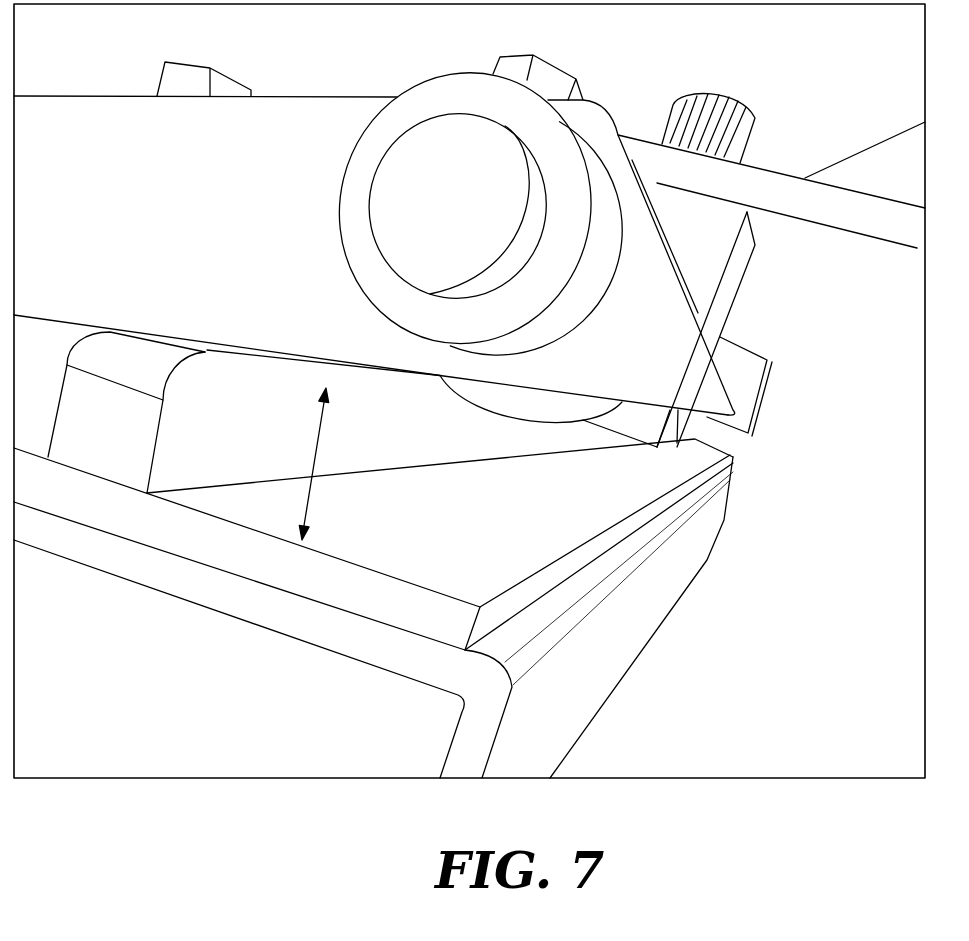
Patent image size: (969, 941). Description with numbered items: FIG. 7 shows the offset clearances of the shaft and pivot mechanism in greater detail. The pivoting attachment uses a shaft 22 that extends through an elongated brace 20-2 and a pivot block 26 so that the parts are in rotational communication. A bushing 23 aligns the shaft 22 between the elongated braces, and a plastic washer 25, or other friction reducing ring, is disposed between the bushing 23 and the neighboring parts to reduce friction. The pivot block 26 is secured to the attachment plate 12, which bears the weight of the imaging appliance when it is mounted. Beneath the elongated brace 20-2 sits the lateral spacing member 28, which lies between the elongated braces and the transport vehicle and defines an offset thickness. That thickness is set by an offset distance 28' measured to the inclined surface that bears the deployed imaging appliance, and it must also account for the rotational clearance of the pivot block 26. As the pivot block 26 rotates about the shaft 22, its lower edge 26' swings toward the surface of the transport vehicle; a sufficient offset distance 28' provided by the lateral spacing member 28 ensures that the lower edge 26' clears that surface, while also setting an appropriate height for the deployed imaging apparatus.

The attachment plate 12 is at (777, 188).
The elongated brace 20-2 is at (204, 264).
The shaft 22 is at (461, 221).
The bushing 23 is at (343, 181).
The plastic washer 25 is at (676, 219).
The pivot block 26 is at (756, 329).
The lower edge 26' is at (633, 458).
The lateral spacing member 28 is at (126, 412).
The offset distance 28' is at (349, 464).